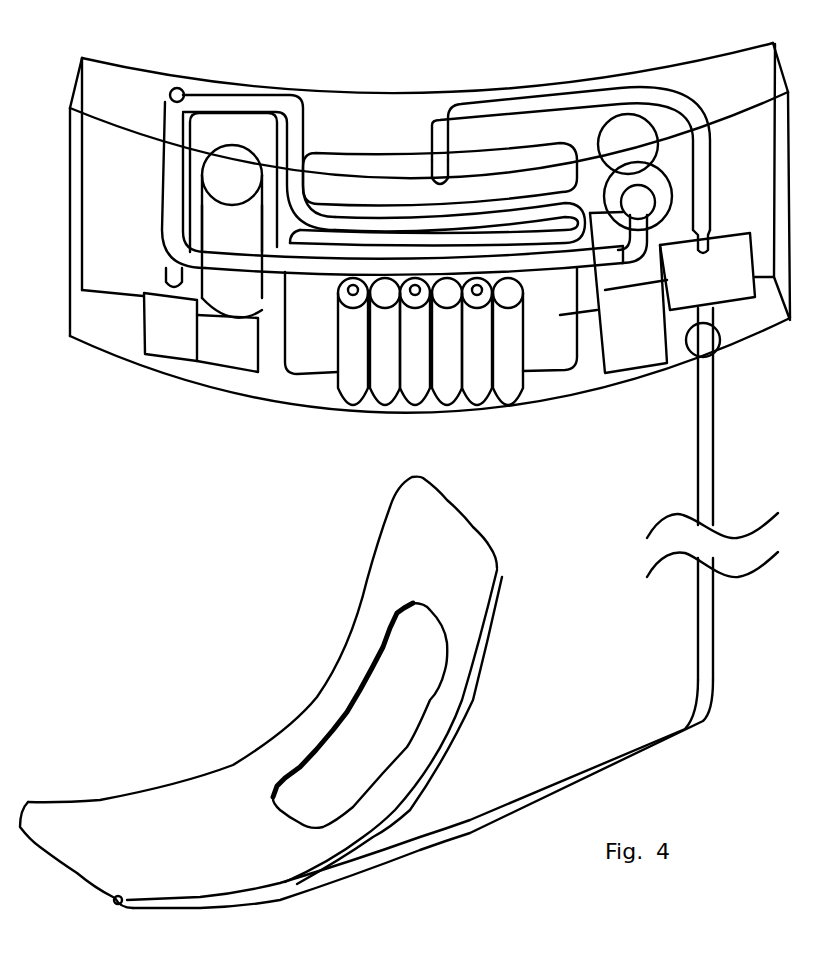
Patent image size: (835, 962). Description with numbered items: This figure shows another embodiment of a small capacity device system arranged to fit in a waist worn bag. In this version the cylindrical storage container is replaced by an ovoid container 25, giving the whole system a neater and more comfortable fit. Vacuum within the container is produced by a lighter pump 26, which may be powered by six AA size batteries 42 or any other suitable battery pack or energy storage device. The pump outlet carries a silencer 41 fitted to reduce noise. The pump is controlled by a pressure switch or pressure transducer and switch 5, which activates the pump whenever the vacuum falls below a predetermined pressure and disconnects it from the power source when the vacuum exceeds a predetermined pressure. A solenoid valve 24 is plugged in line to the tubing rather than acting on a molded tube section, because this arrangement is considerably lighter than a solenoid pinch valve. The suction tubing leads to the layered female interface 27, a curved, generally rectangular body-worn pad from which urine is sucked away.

The pressure switch or pressure transducer and switch 5 is at (625, 132).
The solenoid valve 24 is at (615, 358).
The ovoid container 25 is at (533, 353).
The pump 26 is at (228, 342).
The layered female interface 27 is at (336, 686).
The silencer 41 is at (187, 163).
The batteries 42 is at (383, 387).